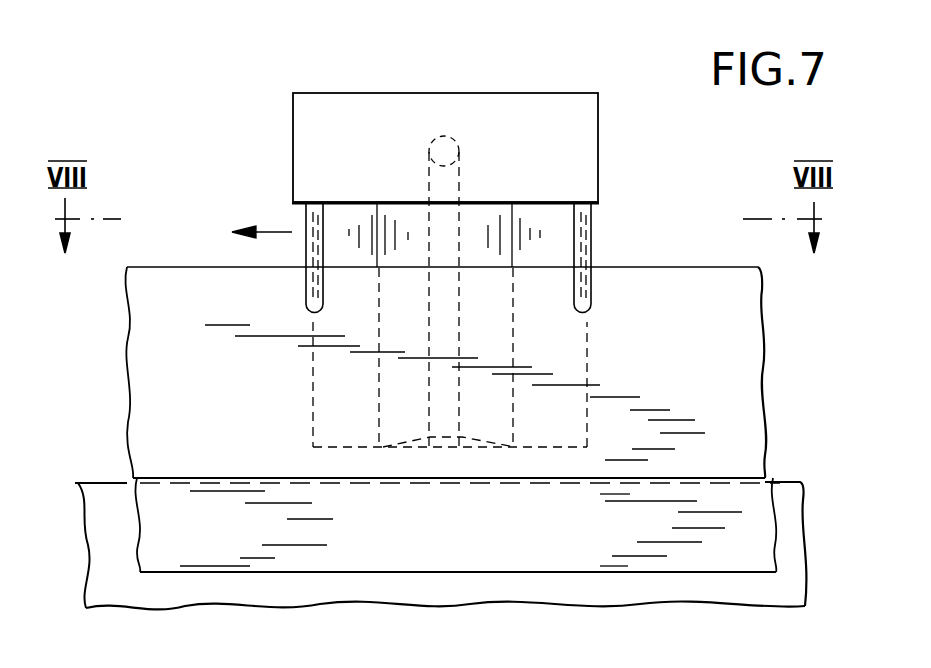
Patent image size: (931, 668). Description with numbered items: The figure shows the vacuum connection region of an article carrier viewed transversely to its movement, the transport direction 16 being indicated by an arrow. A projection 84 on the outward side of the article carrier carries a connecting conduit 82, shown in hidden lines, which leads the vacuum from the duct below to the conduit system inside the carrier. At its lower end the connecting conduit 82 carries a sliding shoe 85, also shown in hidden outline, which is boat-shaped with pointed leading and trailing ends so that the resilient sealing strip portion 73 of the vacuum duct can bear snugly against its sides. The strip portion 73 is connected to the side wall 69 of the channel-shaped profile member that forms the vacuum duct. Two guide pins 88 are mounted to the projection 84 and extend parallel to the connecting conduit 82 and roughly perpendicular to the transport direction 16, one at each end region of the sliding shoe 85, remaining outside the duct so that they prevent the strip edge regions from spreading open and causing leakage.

The projection 84 is at (557, 110).
The transport direction arrow 16 is at (270, 232).
The guide pin 88 is at (312, 285).
The connecting conduit 82 is at (450, 330).
The strip portion 73 is at (740, 381).
The sliding shoe 85 is at (313, 411).
The side wall 69 is at (795, 551).